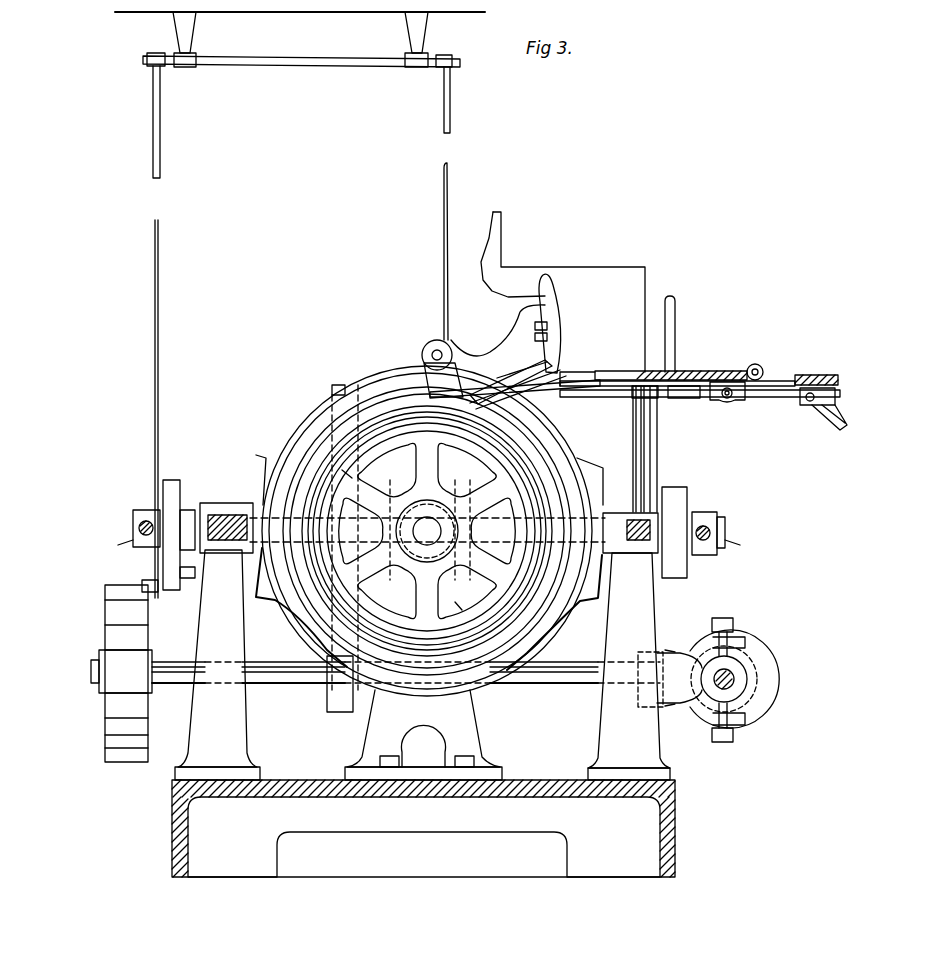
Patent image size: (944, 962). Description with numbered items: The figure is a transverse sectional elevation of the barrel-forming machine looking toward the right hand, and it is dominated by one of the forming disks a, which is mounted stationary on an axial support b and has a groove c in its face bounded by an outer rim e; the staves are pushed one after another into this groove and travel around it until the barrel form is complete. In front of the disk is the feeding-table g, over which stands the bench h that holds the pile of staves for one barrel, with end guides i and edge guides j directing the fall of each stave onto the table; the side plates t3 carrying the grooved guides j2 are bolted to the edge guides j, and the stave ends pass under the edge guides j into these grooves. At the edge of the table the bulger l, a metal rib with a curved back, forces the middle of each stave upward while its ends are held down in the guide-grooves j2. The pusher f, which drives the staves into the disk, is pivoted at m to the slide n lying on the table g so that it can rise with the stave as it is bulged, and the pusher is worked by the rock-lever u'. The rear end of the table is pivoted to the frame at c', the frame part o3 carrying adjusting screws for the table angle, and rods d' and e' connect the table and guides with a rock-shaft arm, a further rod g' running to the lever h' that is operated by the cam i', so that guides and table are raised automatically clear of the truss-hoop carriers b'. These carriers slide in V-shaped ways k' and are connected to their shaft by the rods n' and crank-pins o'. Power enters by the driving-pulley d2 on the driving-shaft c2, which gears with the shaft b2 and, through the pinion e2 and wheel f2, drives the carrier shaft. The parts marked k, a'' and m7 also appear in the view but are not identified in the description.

The rod g' is at (301, 325).
The rod e' is at (459, 251).
The bench h is at (563, 292).
The end guides i is at (570, 323).
The edge guides j is at (550, 322).
The side plates t3 is at (508, 357).
The bulger l is at (511, 375).
The standard k is at (663, 404).
The pusher f is at (677, 369).
The grooved guides j2 is at (577, 371).
The part of the frame o3 is at (700, 401).
The feeding-table g is at (708, 390).
The pivot m is at (763, 368).
The slide n is at (727, 403).
The pivot of the table c' is at (588, 418).
The rock-lever u' is at (820, 409).
The rod d' is at (429, 368).
The outer rim e is at (484, 402).
The disk a is at (427, 531).
The groove c is at (427, 524).
The hub m7 is at (427, 531).
The web a'' is at (346, 466).
The axial supports b is at (455, 597).
The wheel f2 is at (340, 385).
The truss-hoop carriers b' is at (429, 537).
The V-shaped ways k' is at (429, 542).
The cam i' is at (425, 527).
The crank-pins o' is at (429, 532).
The rods n' is at (426, 543).
The lever h' is at (158, 601).
The driving-pulley d2 is at (114, 673).
The driving-shaft c2 is at (406, 684).
The pinion e2 is at (337, 695).
The shaft b2 is at (734, 679).